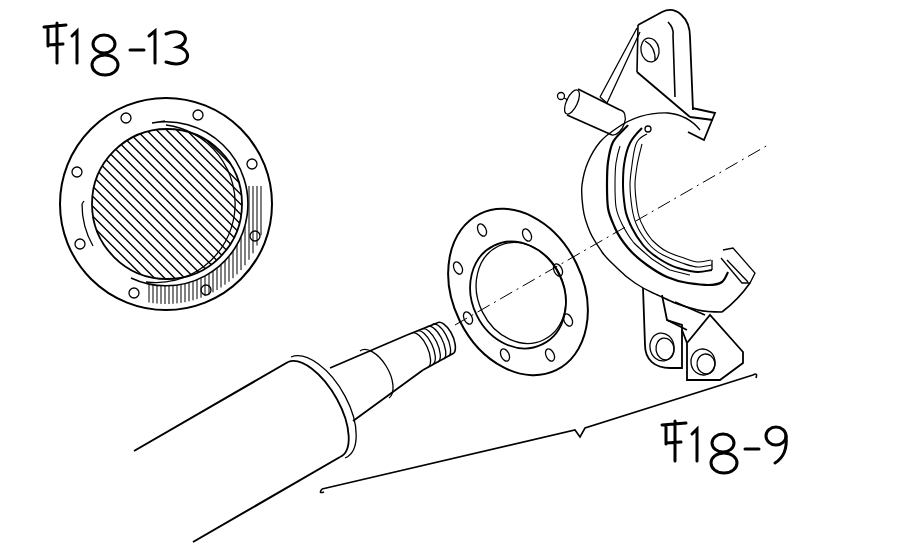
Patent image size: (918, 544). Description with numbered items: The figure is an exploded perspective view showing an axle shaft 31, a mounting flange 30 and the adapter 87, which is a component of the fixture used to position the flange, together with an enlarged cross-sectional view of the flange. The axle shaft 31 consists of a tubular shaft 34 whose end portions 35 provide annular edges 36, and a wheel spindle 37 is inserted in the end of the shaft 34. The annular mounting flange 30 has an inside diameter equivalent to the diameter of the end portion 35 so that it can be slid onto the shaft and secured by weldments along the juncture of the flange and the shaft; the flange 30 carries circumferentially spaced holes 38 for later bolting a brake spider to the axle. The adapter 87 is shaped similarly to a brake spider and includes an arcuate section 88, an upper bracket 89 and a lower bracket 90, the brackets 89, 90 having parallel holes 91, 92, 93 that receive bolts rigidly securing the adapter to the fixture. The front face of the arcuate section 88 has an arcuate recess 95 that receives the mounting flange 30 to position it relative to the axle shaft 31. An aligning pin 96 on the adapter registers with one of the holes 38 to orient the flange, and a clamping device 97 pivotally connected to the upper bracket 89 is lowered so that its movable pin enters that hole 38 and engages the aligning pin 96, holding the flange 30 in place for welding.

In FIG. 9, the mounting flange 30 is at (510, 291).
In FIG. 9, the axle shaft 31 is at (282, 432).
In FIG. 9, the tubular shaft 34 is at (228, 513).
In FIG. 9, the end portion 35 is at (323, 457).
In FIG. 9, the annular edge 36 is at (352, 423).
In FIG. 9, the wheel spindle 37 is at (382, 408).
In FIG. 13, the hole 38 is at (257, 163).
In FIG. 9, the hole 38 is at (549, 361).
In FIG. 9, the adapter 87 is at (669, 203).
In FIG. 9, the arcuate section 88 is at (657, 240).
In FIG. 9, the upper bracket 89 is at (661, 75).
In FIG. 9, the lower bracket 90 is at (702, 342).
In FIG. 9, the hole 91 is at (643, 50).
In FIG. 9, the hole 92 is at (653, 350).
In FIG. 9, the hole 93 is at (692, 375).
In FIG. 9, the arcuate recess 95 is at (617, 200).
In FIG. 9, the aligning pin 96 is at (648, 133).
In FIG. 9, the clamping device 97 is at (572, 131).